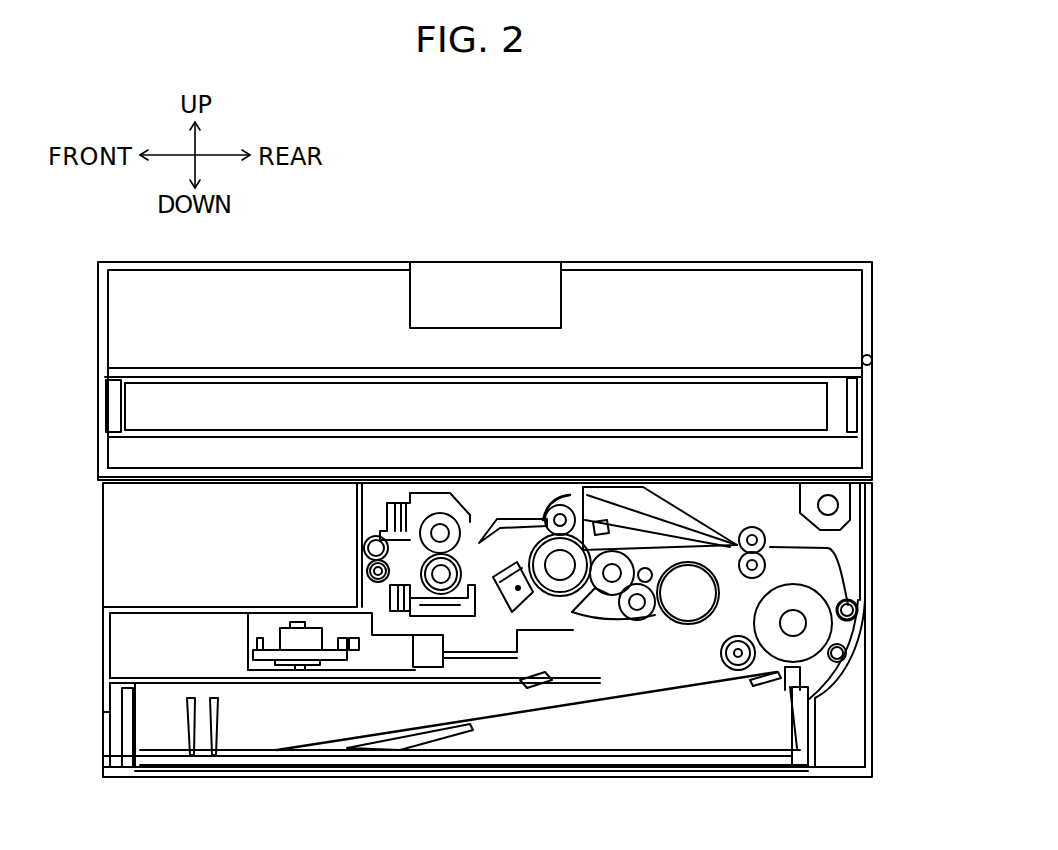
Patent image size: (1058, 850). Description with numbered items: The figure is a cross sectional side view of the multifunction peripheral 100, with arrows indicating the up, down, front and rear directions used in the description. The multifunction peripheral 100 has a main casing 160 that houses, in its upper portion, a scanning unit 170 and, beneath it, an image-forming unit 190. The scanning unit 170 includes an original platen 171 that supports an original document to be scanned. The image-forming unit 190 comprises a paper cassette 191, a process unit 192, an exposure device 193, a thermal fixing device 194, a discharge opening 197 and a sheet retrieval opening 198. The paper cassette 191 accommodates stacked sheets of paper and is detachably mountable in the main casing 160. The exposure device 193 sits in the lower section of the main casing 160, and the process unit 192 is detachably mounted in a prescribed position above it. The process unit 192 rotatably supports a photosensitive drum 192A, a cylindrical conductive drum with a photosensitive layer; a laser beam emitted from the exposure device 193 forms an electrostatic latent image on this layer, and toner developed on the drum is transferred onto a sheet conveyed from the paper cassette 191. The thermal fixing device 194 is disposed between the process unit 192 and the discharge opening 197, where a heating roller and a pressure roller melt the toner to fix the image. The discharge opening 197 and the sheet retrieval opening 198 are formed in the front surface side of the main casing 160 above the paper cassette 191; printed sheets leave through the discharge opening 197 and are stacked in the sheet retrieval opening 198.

The multifunction peripheral 100 is at (891, 198).
The main casing 160 is at (872, 643).
The scanning unit 170 is at (145, 408).
The original platen 171 is at (643, 385).
The image-forming unit 190 is at (845, 552).
The paper cassette 191 is at (285, 730).
The process unit 192 is at (703, 504).
The photosensitive drum 192A is at (556, 592).
The exposure device 193 is at (400, 662).
The thermal fixing device 194 is at (377, 504).
The discharge opening 197 is at (362, 570).
The sheet retrieval opening 198 is at (178, 607).